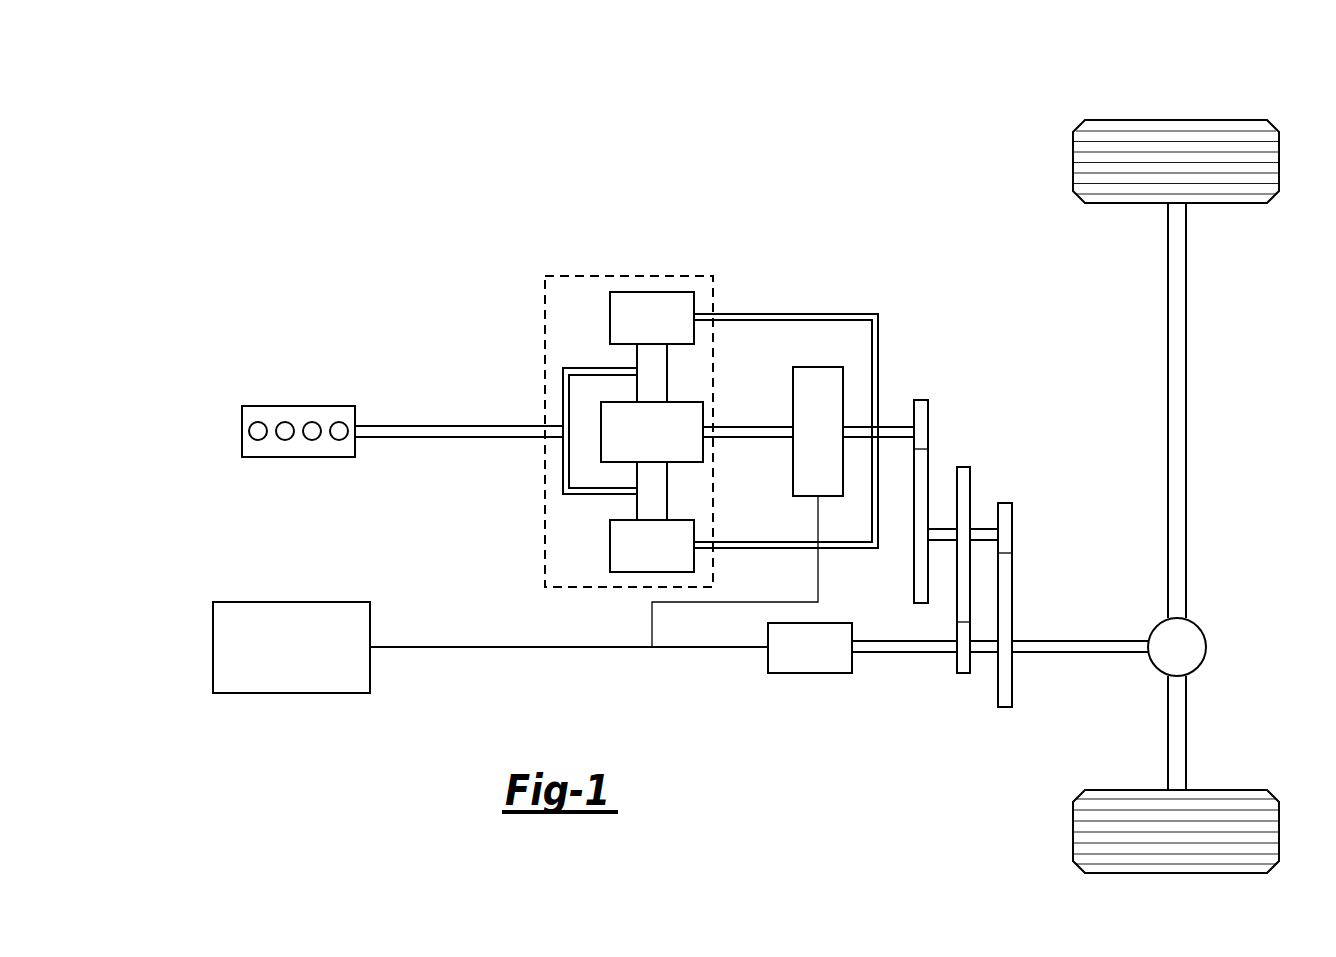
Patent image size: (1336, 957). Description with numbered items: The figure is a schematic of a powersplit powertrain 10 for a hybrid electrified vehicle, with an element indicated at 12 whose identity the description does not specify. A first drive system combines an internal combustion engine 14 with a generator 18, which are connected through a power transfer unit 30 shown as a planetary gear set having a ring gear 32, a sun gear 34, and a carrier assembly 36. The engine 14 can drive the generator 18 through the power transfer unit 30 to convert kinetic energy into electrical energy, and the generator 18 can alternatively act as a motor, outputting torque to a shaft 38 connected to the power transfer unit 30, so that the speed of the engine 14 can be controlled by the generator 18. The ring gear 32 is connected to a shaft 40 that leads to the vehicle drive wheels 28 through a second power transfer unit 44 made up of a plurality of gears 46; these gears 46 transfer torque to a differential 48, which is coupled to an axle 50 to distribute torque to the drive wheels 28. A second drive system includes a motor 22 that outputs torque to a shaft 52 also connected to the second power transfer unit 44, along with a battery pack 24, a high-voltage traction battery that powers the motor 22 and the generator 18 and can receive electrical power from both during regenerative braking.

The powertrain 10 is at (355, 178).
The powertrain 12 is at (879, 225).
The engine 14 is at (242, 431).
The generator 18 is at (843, 383).
The motor 22 is at (808, 673).
The battery pack 24 is at (292, 602).
The vehicle drive wheels 28 is at (1178, 120).
The power transfer unit 30 is at (713, 282).
The ring gear 32 is at (610, 318).
The sun gear 34 is at (687, 462).
The carrier assembly 36 is at (563, 401).
The shaft 38 is at (753, 427).
The shaft 40 is at (898, 437).
The second power transfer unit 44 is at (1030, 424).
The gears 46 is at (970, 480).
The differential 48 is at (1206, 647).
The axle 50 is at (1186, 410).
The shaft 52 is at (905, 652).